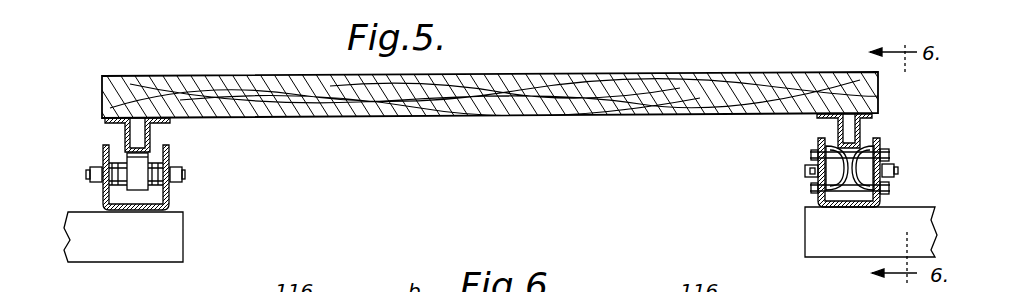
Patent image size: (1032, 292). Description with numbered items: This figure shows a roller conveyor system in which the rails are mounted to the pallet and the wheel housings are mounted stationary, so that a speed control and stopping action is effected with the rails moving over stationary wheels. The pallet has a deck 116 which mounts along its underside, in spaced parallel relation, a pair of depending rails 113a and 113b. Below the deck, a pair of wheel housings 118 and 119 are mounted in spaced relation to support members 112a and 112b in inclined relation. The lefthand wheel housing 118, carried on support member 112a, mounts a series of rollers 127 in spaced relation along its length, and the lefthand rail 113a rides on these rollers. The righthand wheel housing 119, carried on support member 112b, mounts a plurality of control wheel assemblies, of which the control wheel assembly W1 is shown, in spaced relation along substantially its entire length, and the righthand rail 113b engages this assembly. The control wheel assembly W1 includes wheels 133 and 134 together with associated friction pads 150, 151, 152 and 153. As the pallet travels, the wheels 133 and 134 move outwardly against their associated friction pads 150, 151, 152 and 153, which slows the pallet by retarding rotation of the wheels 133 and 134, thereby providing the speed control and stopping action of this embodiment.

The deck 116 is at (644, 76).
The depending rail 113a is at (150, 131).
The depending rail 113b is at (838, 125).
The roller 127 is at (140, 160).
The lefthand wheel housing 118 is at (165, 198).
The support member 112a is at (167, 253).
The support member 112b is at (815, 237).
The friction pad 150 is at (860, 150).
The righthand wheel housing 119 is at (822, 195).
The wheel 133 is at (815, 172).
The friction pad 153 is at (822, 141).
The friction pad 152 is at (818, 180).
The wheel 134 is at (883, 143).
The control wheel assembly W1 is at (890, 167).
The friction pad 151 is at (880, 195).